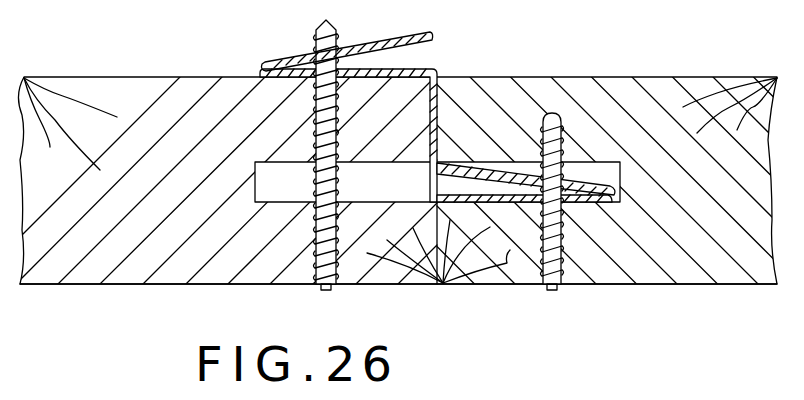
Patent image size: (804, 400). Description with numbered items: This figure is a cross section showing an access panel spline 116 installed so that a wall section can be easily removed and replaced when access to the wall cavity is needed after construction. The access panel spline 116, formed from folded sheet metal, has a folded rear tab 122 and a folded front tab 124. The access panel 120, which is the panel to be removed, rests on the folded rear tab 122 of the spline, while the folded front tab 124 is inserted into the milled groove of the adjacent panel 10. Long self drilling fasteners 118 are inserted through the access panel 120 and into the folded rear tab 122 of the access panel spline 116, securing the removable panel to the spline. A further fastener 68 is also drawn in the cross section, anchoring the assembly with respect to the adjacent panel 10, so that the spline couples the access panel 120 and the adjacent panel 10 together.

The adjacent panel 10 is at (690, 288).
The access panel 120 is at (124, 284).
The access panel spline 116 is at (441, 68).
The folded rear tab 122 is at (262, 66).
The folded front tab 124 is at (492, 165).
The long self drilling fastener 118 is at (333, 285).
The fastener screw 68 is at (541, 287).